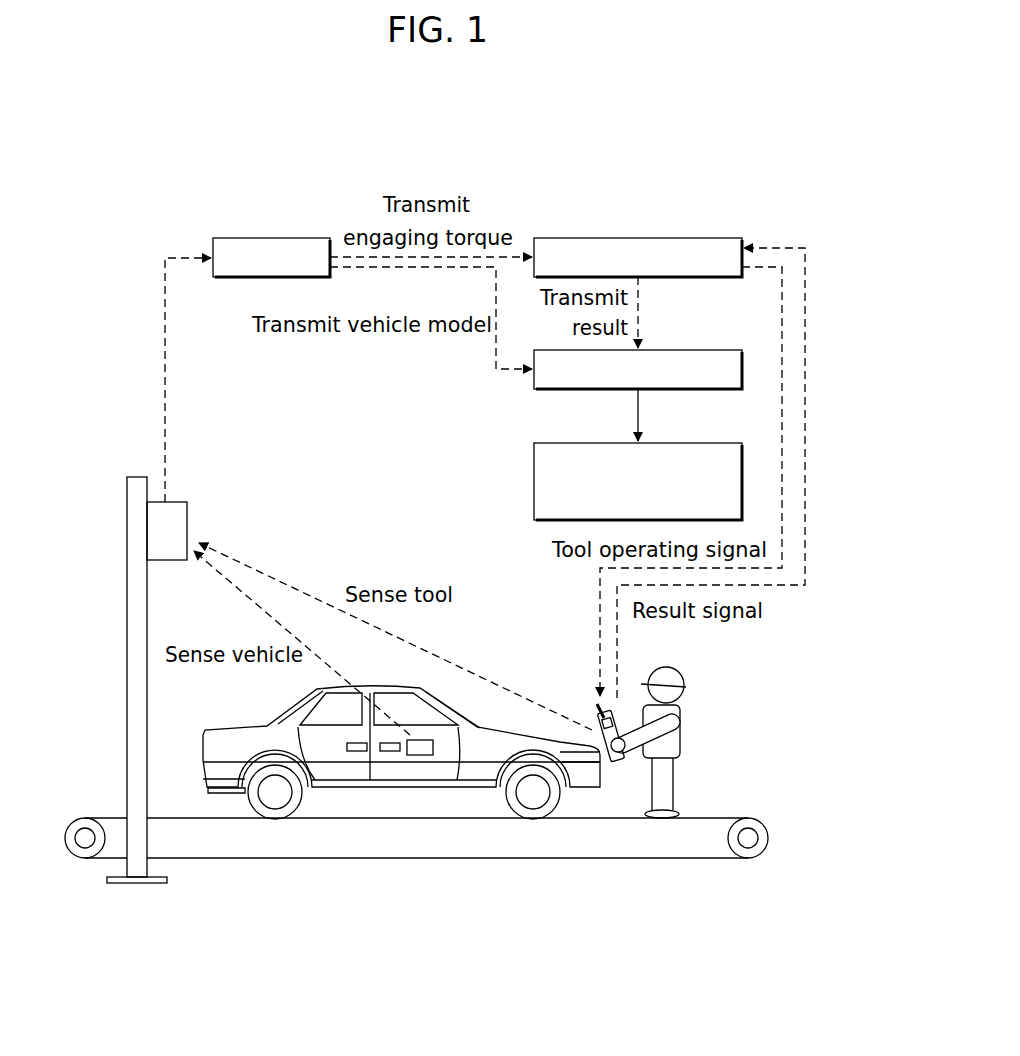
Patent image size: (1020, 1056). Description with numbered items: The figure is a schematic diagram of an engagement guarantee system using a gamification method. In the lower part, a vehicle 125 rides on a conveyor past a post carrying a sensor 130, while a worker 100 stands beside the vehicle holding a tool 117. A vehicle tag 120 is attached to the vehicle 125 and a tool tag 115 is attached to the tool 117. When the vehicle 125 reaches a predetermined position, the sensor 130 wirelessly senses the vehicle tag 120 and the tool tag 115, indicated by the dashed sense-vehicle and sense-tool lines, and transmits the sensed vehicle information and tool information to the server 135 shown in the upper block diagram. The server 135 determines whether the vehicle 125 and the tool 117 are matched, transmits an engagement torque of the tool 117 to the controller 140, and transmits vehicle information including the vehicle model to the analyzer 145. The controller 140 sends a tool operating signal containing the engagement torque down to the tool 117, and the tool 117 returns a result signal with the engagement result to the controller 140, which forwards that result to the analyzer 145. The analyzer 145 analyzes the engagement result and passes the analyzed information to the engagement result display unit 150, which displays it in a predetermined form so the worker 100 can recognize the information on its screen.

The worker 100 is at (682, 728).
The tool tag 115 is at (607, 755).
The tool 117 is at (625, 758).
The vehicle tag 120 is at (418, 755).
The vehicle 125 is at (238, 727).
The sensor 130 is at (187, 518).
The server 135 is at (305, 238).
The controller 140 is at (714, 238).
The analyzer 145 is at (714, 350).
The engagement result display unit 150 is at (714, 443).